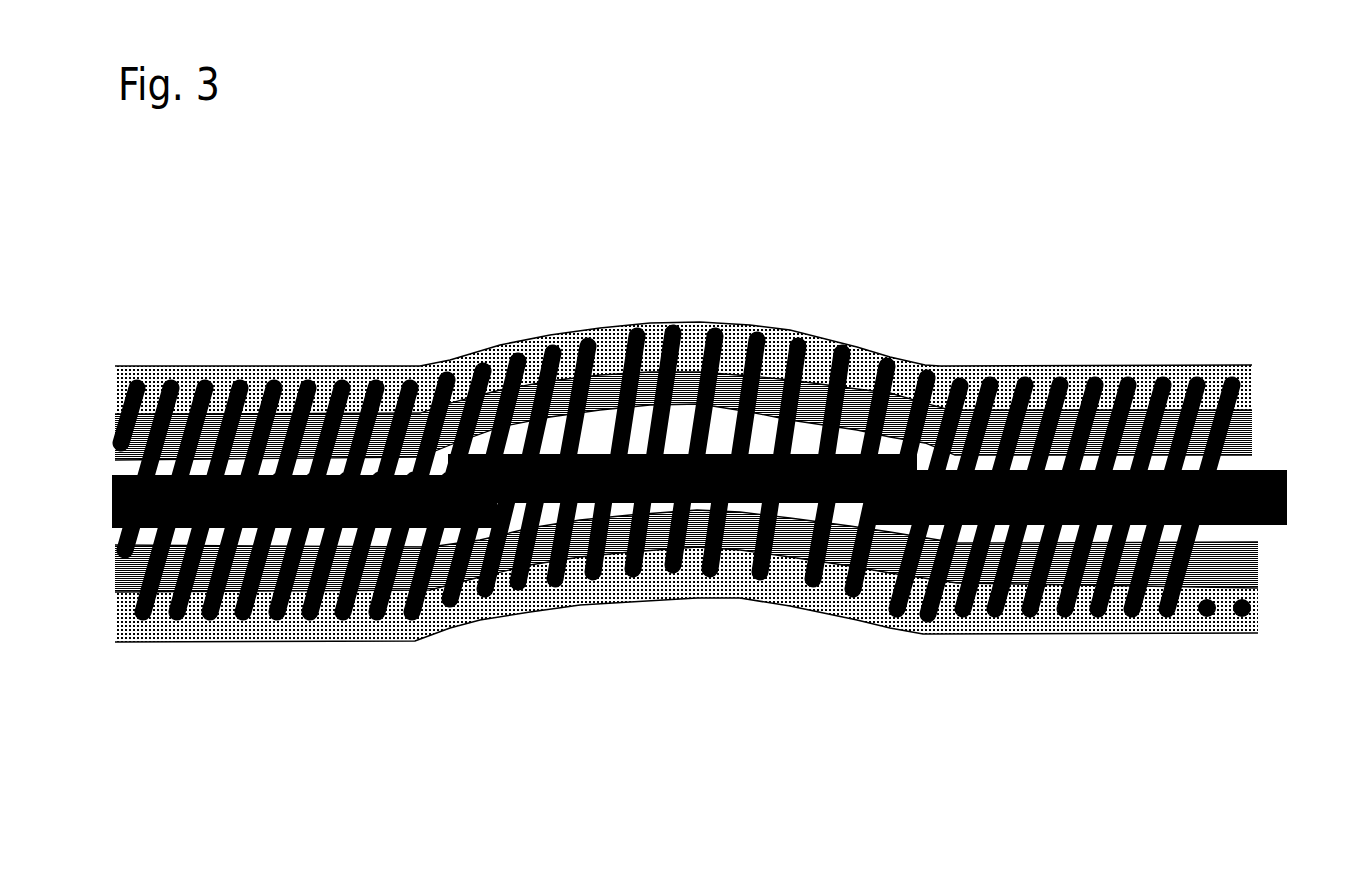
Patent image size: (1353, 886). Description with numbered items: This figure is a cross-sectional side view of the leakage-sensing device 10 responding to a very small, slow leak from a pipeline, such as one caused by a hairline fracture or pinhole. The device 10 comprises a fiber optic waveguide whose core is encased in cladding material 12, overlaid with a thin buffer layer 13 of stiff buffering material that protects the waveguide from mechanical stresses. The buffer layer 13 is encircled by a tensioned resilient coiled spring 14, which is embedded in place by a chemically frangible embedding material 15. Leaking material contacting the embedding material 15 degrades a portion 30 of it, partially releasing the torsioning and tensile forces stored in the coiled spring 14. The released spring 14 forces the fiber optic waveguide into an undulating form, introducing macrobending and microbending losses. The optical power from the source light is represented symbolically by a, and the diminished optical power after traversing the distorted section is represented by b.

The leakage-sensing device 10 is at (340, 308).
The degraded portion of the embedding material 30 is at (938, 260).
The cladding material 12 is at (1233, 562).
The buffer layer 13 is at (1196, 588).
The tensioned resilient coiled spring 14 is at (1133, 612).
The chemically frangible embedding material 15 is at (1046, 636).
The optical power from the source light a is at (1292, 462).
The diminished optical power b is at (102, 470).